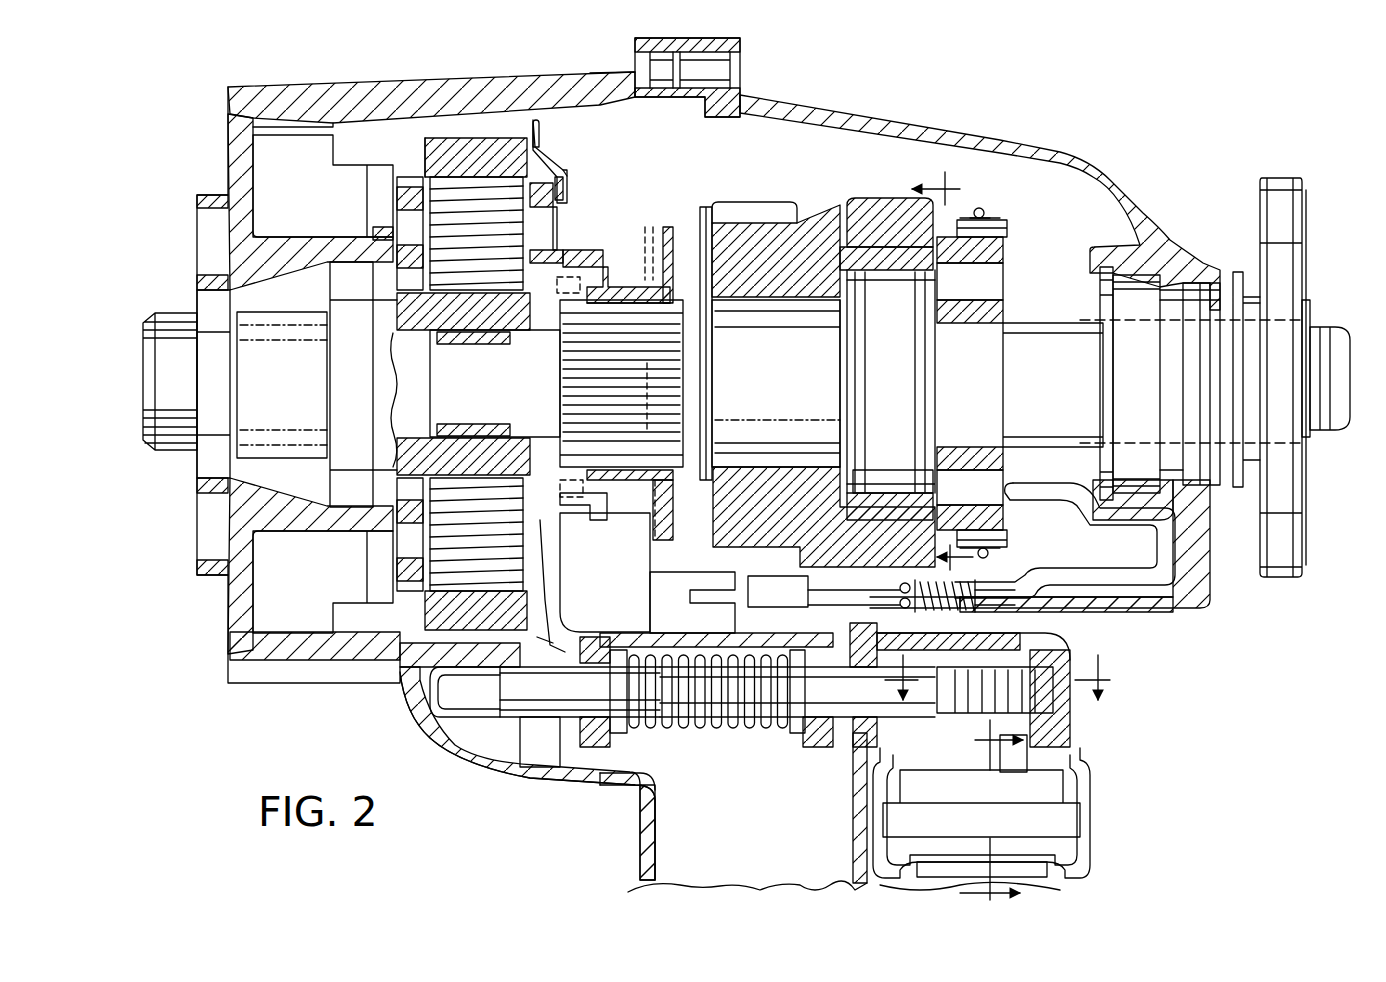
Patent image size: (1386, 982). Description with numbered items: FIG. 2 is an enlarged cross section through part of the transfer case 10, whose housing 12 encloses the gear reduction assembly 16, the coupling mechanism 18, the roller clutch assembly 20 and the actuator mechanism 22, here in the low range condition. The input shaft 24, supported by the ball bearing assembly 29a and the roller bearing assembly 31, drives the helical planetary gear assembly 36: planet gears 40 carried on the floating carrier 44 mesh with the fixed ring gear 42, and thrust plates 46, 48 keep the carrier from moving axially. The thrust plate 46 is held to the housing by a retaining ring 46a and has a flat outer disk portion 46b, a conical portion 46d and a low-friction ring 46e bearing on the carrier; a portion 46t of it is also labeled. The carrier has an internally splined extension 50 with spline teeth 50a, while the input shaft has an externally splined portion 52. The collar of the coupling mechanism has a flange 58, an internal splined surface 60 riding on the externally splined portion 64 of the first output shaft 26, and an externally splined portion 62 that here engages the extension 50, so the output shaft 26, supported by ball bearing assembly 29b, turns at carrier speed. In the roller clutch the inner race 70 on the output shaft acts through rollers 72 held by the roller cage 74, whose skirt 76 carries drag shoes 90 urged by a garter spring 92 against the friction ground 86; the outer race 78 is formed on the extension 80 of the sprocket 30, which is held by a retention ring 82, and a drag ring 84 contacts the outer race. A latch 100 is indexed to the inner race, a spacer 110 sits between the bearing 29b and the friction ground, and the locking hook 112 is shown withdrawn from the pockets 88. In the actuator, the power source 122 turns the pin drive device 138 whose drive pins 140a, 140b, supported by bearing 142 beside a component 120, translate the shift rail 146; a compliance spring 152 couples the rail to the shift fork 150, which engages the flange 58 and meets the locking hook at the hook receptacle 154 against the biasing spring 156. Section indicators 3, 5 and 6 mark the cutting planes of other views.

The transfer case 10 is at (795, 76).
The housing 12 is at (1063, 118).
The gear reduction assembly 16 is at (497, 126).
The coupling mechanism 18 is at (630, 196).
The roller clutch assembly 20 is at (848, 160).
The actuator mechanism 22 is at (1100, 748).
The input shaft 24 is at (142, 395).
The first output shaft 26 is at (1342, 365).
The ball bearing assembly 29a is at (327, 395).
The ball bearing assembly 29b is at (1142, 305).
The sprocket 30 is at (752, 202).
The roller bearing assembly 31 is at (478, 425).
The helical planetary gear assembly 36 is at (430, 137).
The planet gears 40 is at (422, 187).
The fixed ring gear 42 is at (449, 138).
The floating carrier 44 is at (558, 226).
The thrust plate 46 is at (548, 150).
The retaining ring 46a is at (535, 120).
The outer disk portion 46b is at (505, 690).
The conical portion 46d is at (580, 692).
The low-friction ring 46e is at (567, 168).
The lever tab 46t is at (580, 612).
The thrust plate 48 is at (385, 228).
The internally splined extension 50 is at (648, 233).
The spline teeth 50a is at (590, 513).
The externally splined portion 52 is at (587, 505).
The radially extending flange 58 is at (668, 227).
The internal splined surface 60 is at (580, 420).
The externally splined portion 62 is at (608, 283).
The externally splined portion 64 is at (560, 368).
The inner race 70 is at (873, 285).
The rollers 72 is at (893, 285).
The roller cage 74 is at (915, 285).
The skirt 76 is at (1007, 228).
The outer race 78 is at (900, 510).
The extension 80 is at (897, 198).
The retention ring 82 is at (703, 260).
The drag ring 84 is at (842, 258).
The friction ground 86 is at (1003, 255).
The pockets 88 is at (1000, 283).
The drag shoes 90 is at (990, 214).
The garter spring 92 is at (985, 210).
The latch 100 is at (848, 405).
The spacer 110 is at (1080, 397).
The locking hook 112 is at (1117, 522).
The shift housing 120 is at (1078, 727).
The power source 122 is at (1062, 871).
The pin drive device 138 is at (1010, 752).
The drive pin 140a is at (1050, 657).
The drive pin 140b is at (955, 715).
The bearing 142 is at (1012, 642).
The shift rail 146 is at (520, 703).
The shift fork 150 is at (650, 600).
The compliance spring 152 is at (703, 728).
The hook receptacle 154 is at (729, 602).
The biasing spring 156 is at (903, 597).
The section line 3- 3 is at (1047, 578).
The section line 5- 5 is at (991, 817).
The section line 6- 6 is at (994, 677).